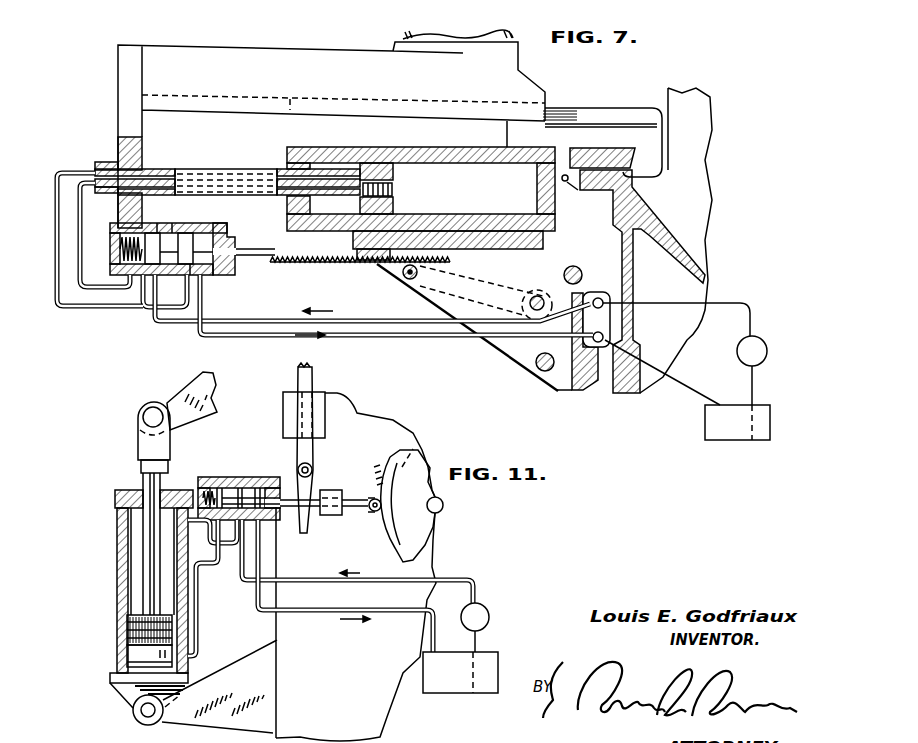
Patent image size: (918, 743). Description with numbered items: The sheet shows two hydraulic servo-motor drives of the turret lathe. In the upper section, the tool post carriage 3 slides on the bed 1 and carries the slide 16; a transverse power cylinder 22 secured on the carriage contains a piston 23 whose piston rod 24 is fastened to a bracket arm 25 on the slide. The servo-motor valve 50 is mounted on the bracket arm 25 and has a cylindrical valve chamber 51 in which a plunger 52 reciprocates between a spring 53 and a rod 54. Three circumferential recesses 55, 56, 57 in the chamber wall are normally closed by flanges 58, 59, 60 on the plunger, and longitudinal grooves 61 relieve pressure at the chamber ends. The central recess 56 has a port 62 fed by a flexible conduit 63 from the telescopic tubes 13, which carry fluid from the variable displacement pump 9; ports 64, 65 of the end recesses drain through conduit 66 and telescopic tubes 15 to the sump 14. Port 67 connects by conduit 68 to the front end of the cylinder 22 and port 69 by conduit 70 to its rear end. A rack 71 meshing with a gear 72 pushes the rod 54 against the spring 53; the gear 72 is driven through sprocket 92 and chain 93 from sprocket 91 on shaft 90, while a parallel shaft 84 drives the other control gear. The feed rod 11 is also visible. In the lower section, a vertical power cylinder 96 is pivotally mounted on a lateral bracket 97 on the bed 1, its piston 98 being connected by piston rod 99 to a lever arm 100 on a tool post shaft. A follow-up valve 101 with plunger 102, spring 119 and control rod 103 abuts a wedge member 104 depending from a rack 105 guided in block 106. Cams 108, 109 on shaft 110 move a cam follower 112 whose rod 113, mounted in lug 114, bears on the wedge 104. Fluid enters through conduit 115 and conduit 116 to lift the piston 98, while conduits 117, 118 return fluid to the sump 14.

In FIG. 7, the bed 1 is at (685, 239).
In FIG. 7, the tool post carriage 3 is at (578, 134).
In FIG. 7, the variable displacement pump 9 is at (763, 338).
In FIG. 11, the variable displacement pump 9 is at (490, 610).
In FIG. 7, the feed rod 11 is at (574, 262).
In FIG. 7, the telescopic tubes 13 is at (610, 298).
In FIG. 7, the sump 14 is at (703, 428).
In FIG. 11, the sump 14 is at (500, 652).
In FIG. 7, the telescopic tubes 15 is at (610, 333).
In FIG. 7, the slide 16 is at (248, 47).
In FIG. 7, the transverse power cylinder 22 is at (417, 147).
In FIG. 7, the piston 23 is at (395, 197).
In FIG. 7, the piston rod 24 is at (218, 170).
In FIG. 7, the bracket arm 25 is at (118, 128).
In FIG. 7, the servo-motor valve 50 is at (230, 297).
In FIG. 7, the valve chamber 51 is at (158, 238).
In FIG. 7, the plunger 52 is at (190, 250).
In FIG. 7, the spring 53 is at (111, 245).
In FIG. 7, the rod 54 is at (248, 250).
In FIG. 7, the circumferential recess 55 is at (137, 239).
In FIG. 7, the central recess 56 is at (178, 237).
In FIG. 7, the circumferential recess 57 is at (200, 230).
In FIG. 7, the flange 58 is at (137, 268).
In FIG. 7, the flange 59 is at (174, 242).
In FIG. 7, the flange 60 is at (220, 267).
In FIG. 7, the longitudinal grooves 61 is at (112, 262).
In FIG. 7, the port 62 is at (165, 291).
In FIG. 7, the flexible conduit 63 is at (353, 315).
In FIG. 7, the port 64 is at (138, 272).
In FIG. 7, the port 65 is at (205, 277).
In FIG. 7, the conduit 66 is at (398, 336).
In FIG. 7, the port 67 is at (152, 248).
In FIG. 7, the conduit 68 is at (76, 224).
In FIG. 7, the port 69 is at (185, 248).
In FIG. 7, the conduit 70 is at (93, 307).
In FIG. 7, the rack 71 is at (330, 261).
In FIG. 7, the gear 72 is at (417, 280).
In FIG. 7, the shaft 84 is at (538, 370).
In FIG. 7, the shaft 90 is at (530, 297).
In FIG. 7, the sprocket 91 is at (526, 298).
In FIG. 7, the sprocket 92 is at (440, 277).
In FIG. 7, the chain 93 is at (490, 275).
In FIG. 11, the vertical power cylinder 96 is at (117, 557).
In FIG. 11, the lateral bracket 97 is at (235, 665).
In FIG. 11, the piston 98 is at (127, 630).
In FIG. 11, the piston rod 99 is at (148, 525).
In FIG. 11, the lever arm 100 is at (187, 385).
In FIG. 11, the follow-up valve 101 is at (230, 477).
In FIG. 11, the plunger 102 is at (248, 492).
In FIG. 11, the control rod 103 is at (304, 536).
In FIG. 11, the wedge member 104 is at (317, 487).
In FIG. 11, the rack 105 is at (320, 383).
In FIG. 11, the block 106 is at (290, 415).
In FIG. 11, the cam wheel 108 is at (400, 450).
In FIG. 11, the cam wheel 109 is at (423, 543).
In FIG. 11, the shaft 110 is at (443, 507).
In FIG. 11, the cam follower 112 is at (375, 495).
In FIG. 11, the rod 113 is at (355, 513).
In FIG. 11, the lug 114 is at (332, 515).
In FIG. 11, the conduit 115 is at (368, 576).
In FIG. 11, the conduit 116 is at (200, 628).
In FIG. 11, the conduit 117 is at (212, 541).
In FIG. 11, the conduit 118 is at (320, 614).
In FIG. 11, the spring 119 is at (213, 487).